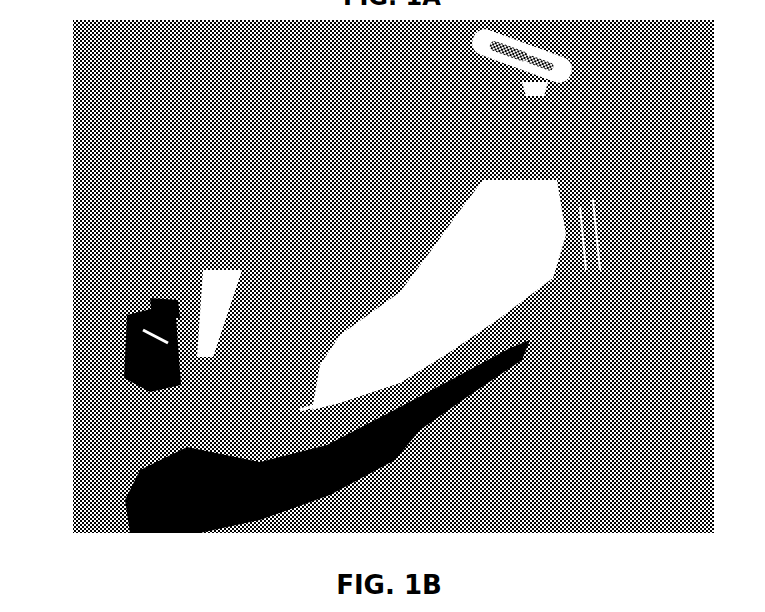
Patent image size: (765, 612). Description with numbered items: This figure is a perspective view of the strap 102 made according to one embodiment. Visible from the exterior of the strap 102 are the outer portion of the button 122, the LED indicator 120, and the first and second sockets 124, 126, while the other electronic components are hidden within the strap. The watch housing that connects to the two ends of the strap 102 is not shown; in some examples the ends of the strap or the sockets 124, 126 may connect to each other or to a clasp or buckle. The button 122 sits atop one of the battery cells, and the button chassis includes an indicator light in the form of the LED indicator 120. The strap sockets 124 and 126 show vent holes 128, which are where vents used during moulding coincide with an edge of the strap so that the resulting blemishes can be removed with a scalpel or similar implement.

The strap 102 is at (518, 323).
The LED indicator 120 is at (158, 310).
The button 122 is at (124, 346).
The first socket 124 is at (150, 222).
The second socket 126 is at (477, 42).
The vent holes 128 is at (541, 61).